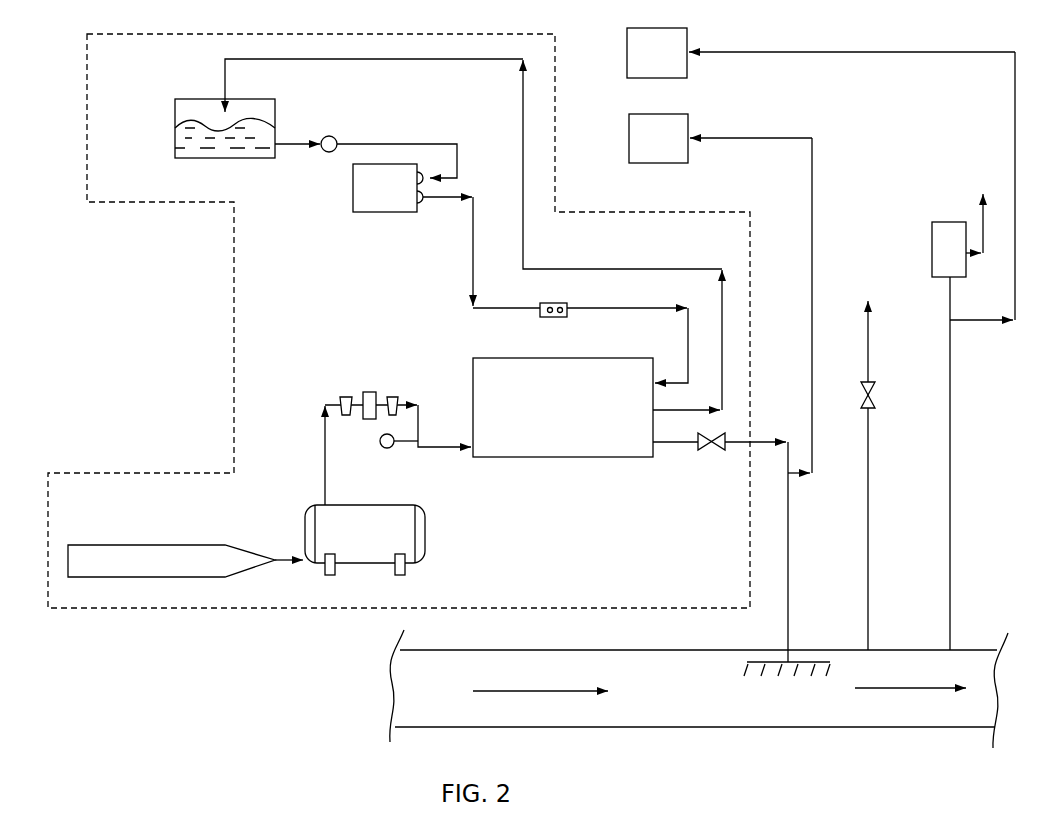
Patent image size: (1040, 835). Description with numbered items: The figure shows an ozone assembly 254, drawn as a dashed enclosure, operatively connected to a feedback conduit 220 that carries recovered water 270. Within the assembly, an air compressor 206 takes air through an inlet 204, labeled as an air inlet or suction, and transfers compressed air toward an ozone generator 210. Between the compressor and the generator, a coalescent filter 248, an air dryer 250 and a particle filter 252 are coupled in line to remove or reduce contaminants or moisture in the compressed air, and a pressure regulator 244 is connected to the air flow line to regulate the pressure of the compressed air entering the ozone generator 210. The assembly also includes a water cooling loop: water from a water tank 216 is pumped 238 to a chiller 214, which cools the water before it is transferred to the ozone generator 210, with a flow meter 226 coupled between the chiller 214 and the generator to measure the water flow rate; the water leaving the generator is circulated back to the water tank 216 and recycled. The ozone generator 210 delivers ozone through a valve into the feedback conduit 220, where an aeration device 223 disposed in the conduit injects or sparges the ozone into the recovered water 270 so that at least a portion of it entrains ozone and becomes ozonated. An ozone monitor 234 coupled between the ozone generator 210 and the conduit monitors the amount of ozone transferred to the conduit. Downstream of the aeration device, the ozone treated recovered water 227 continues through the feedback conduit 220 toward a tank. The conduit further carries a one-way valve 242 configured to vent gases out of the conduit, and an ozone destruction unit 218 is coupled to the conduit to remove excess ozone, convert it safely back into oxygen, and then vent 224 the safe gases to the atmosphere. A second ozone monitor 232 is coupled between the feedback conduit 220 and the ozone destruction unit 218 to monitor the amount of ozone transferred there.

The inlet 204 is at (704, 452).
The air compressor 206 is at (388, 490).
The ozone generator 210 is at (596, 407).
The chiller 214 is at (413, 235).
The water tank 216 is at (232, 160).
The ozone destruction unit 218 is at (972, 436).
The feedback conduit 220 is at (575, 728).
The aeration device 223 is at (770, 676).
The vent 224 is at (978, 215).
The flow meter 226 is at (576, 304).
The ozone treated recovered water 227 is at (910, 678).
The ozone monitor 232 is at (821, 174).
The ozone monitor 234 is at (720, 293).
The pump 238 is at (334, 137).
The one-way valve 242 is at (876, 398).
The pressure regulator 244 is at (392, 450).
The coalescent filter 248 is at (340, 395).
The air dryer 250 is at (371, 391).
The particle filter 252 is at (405, 395).
The ozone assembly 254 is at (190, 470).
The recovered water 270 is at (540, 682).